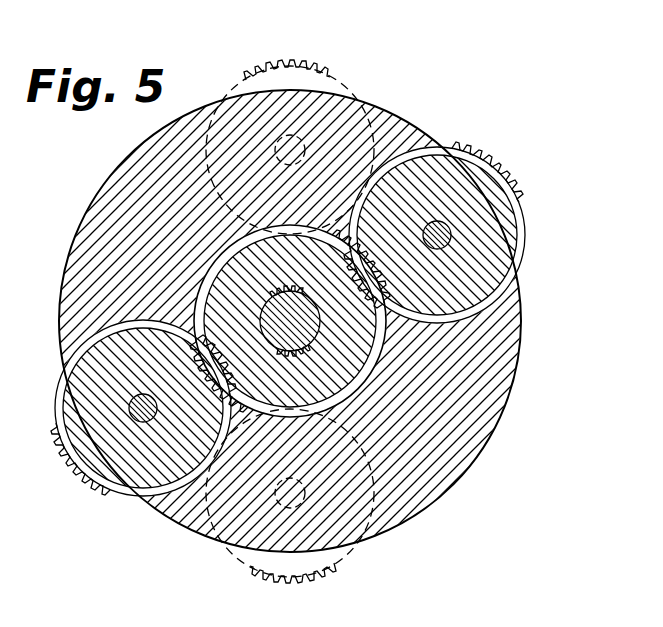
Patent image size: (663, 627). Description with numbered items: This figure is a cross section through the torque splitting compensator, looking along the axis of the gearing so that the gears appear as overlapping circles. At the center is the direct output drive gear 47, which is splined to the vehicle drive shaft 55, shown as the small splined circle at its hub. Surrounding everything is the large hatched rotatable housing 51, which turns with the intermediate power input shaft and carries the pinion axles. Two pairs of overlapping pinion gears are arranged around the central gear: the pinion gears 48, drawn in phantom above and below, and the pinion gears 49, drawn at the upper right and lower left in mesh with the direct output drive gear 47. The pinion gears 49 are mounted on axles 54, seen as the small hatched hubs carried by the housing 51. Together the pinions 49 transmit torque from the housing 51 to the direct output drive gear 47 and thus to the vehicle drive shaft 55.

The direct output drive gear 47 is at (217, 308).
The pinion gears 48 is at (330, 58).
The pinion gears 49 is at (482, 153).
The rotatable housing 51 is at (128, 162).
The axles 54 is at (448, 222).
The vehicle drive shaft 55 is at (275, 310).